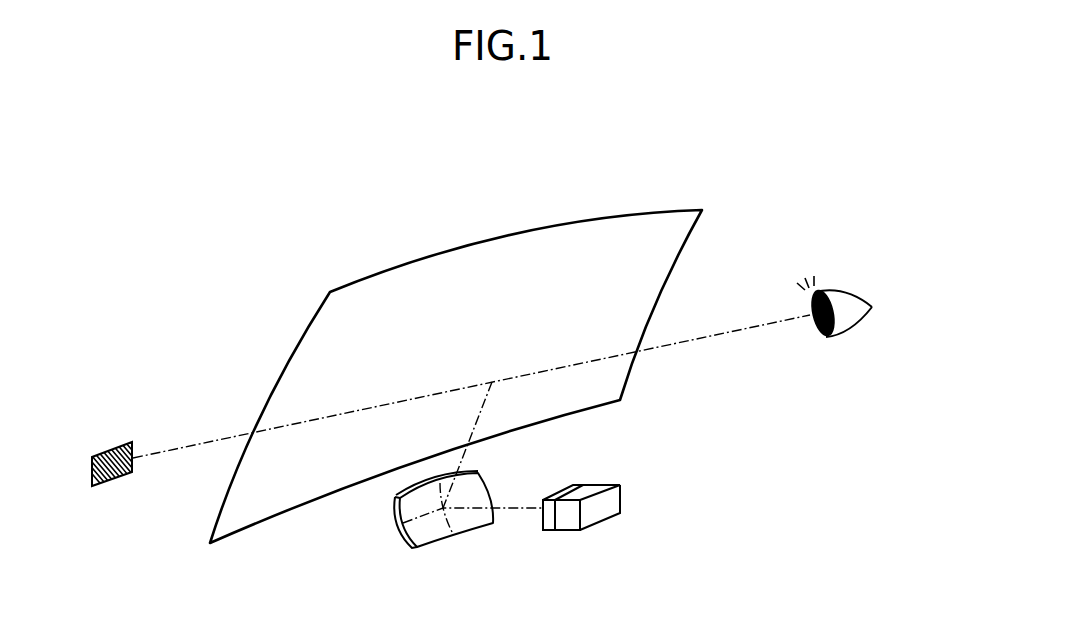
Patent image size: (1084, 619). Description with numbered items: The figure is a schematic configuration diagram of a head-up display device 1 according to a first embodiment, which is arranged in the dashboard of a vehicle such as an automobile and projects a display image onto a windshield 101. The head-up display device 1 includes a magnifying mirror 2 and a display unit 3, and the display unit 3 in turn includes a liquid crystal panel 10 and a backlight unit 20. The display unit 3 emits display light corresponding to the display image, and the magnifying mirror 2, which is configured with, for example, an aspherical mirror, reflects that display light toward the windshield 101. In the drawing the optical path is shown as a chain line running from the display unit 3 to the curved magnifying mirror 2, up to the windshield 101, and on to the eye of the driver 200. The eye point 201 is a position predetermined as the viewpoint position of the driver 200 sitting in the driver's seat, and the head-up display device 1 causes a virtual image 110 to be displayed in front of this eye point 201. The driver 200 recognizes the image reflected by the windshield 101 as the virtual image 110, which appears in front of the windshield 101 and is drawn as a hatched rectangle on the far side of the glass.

The head-up display device 1 is at (294, 158).
The windshield 101 is at (598, 202).
The magnifying mirror 2 is at (402, 541).
The display unit 3 is at (621, 546).
The liquid crystal panel 10 is at (547, 531).
The backlight unit 20 is at (610, 501).
The virtual image 110 is at (118, 442).
The driver 200 is at (815, 270).
The eye point 201 is at (813, 315).